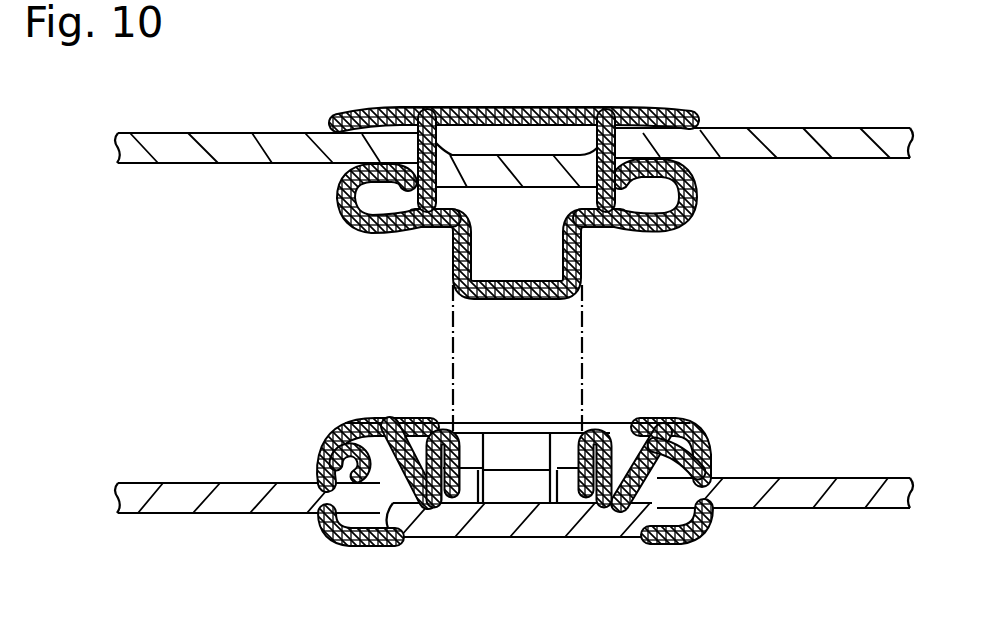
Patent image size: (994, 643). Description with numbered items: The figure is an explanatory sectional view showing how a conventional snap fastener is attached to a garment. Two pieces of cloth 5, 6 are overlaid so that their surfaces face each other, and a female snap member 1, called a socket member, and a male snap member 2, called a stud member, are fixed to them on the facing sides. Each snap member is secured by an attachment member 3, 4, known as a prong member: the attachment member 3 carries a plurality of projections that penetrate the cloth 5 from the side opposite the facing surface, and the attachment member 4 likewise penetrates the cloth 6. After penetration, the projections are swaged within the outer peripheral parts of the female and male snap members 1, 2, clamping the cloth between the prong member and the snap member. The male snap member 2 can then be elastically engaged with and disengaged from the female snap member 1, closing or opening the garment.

The female snap member 1 is at (692, 420).
The male snap member 2 is at (663, 222).
The attachment member 3 is at (700, 535).
The attachment member 4 is at (650, 107).
The cloth 5 is at (887, 478).
The cloth 6 is at (885, 158).